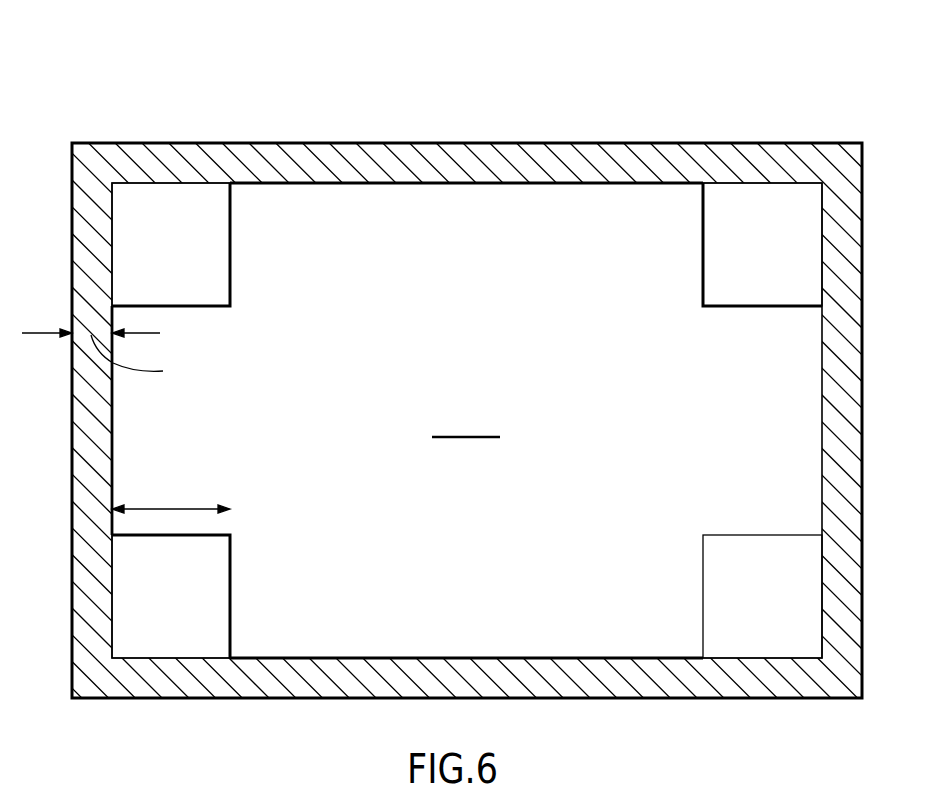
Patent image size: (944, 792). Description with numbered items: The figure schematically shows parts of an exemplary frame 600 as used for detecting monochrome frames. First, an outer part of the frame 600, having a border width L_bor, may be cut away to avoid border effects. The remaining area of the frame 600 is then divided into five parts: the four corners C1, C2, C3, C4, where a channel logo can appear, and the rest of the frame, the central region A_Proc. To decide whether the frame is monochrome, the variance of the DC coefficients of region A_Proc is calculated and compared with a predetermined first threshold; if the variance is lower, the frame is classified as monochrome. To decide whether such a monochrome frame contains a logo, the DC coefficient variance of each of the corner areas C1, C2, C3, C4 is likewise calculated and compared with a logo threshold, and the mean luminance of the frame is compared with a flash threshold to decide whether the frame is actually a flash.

The frame 600 is at (472, 377).
The corner C1 is at (186, 258).
The corner C2 is at (777, 258).
The corner C3 is at (185, 612).
The corner C4 is at (775, 613).